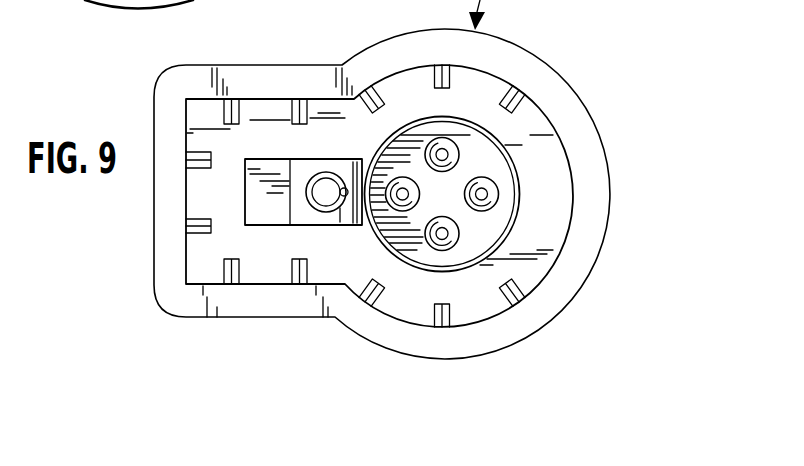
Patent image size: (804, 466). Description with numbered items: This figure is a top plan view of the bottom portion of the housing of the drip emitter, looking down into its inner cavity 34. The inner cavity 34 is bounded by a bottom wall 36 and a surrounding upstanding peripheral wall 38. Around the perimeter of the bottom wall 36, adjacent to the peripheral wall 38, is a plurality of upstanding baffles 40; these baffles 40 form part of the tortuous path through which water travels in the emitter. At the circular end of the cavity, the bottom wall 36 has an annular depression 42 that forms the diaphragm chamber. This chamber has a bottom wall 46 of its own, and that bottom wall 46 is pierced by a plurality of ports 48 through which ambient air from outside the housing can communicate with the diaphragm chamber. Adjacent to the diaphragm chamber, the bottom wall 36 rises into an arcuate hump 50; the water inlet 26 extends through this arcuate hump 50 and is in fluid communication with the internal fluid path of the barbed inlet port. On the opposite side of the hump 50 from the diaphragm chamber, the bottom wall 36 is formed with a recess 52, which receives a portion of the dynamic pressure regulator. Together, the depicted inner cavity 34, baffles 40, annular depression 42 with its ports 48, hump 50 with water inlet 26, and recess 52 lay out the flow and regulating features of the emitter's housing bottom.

The water inlet 26 is at (326, 178).
The inner cavity 34 is at (520, 125).
The bottom wall 36 is at (545, 223).
The peripheral wall 38 is at (570, 298).
The baffles 40 is at (517, 287).
The annular depression 42 is at (500, 168).
The bottom wall of diaphragm chamber 46 is at (467, 233).
The ports 48 is at (499, 198).
The arcuate hump 50 is at (345, 160).
The recess 52 is at (273, 157).